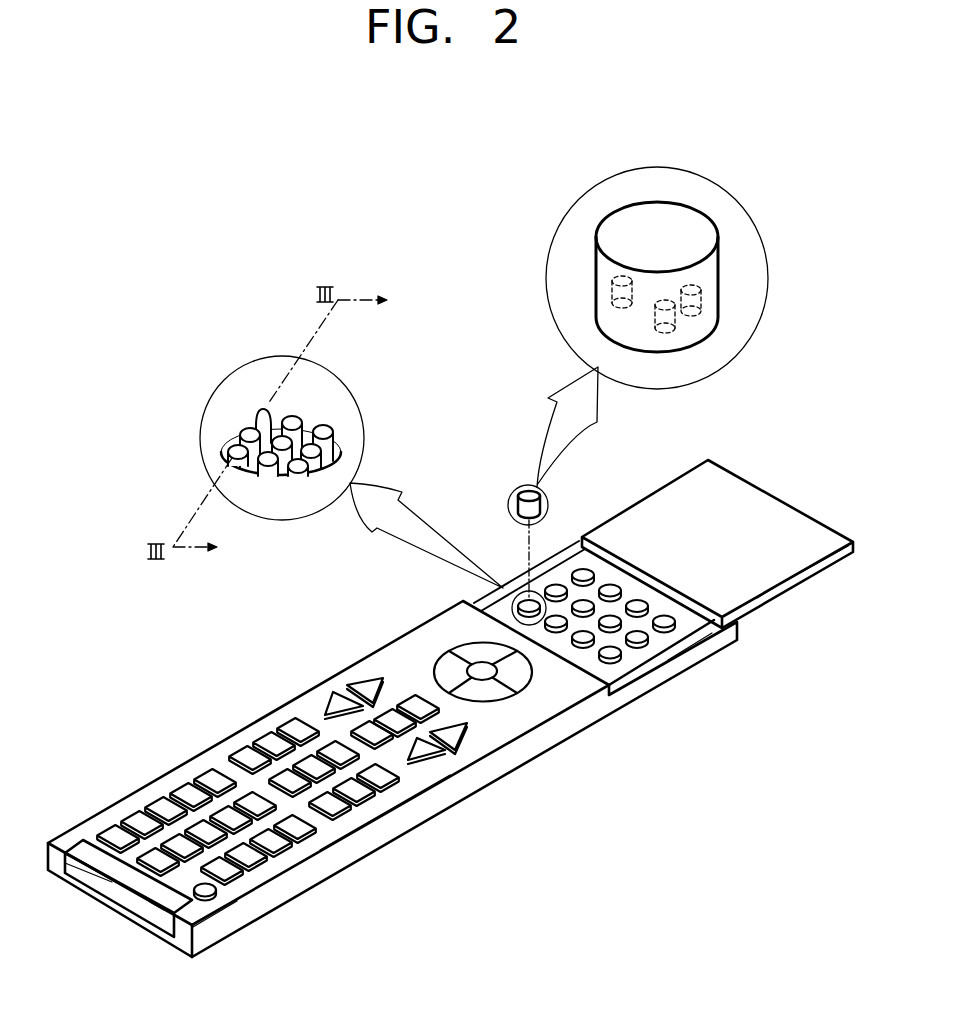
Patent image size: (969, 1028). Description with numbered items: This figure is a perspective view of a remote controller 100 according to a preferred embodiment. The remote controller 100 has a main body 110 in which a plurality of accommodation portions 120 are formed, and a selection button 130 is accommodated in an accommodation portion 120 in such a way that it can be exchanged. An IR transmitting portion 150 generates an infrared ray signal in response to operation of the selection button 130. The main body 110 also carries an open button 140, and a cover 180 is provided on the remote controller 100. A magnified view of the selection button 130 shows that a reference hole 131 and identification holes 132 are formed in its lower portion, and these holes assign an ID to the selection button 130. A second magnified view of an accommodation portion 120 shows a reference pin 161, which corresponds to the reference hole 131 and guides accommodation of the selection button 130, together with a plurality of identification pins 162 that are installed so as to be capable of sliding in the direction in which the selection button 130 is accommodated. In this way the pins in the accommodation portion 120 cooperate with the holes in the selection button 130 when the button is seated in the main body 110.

The remote controller 100 is at (302, 654).
The main body 110 is at (365, 842).
The accommodation portion 120 is at (522, 602).
The selection button 130 is at (525, 493).
The reference hole 131 is at (618, 288).
The identification holes 132 is at (693, 312).
The open button 140 is at (245, 753).
The IR transmitting portion 150 is at (132, 903).
The reference pin 161 is at (259, 410).
The identification pins 162 is at (322, 418).
The cover 180 is at (665, 492).